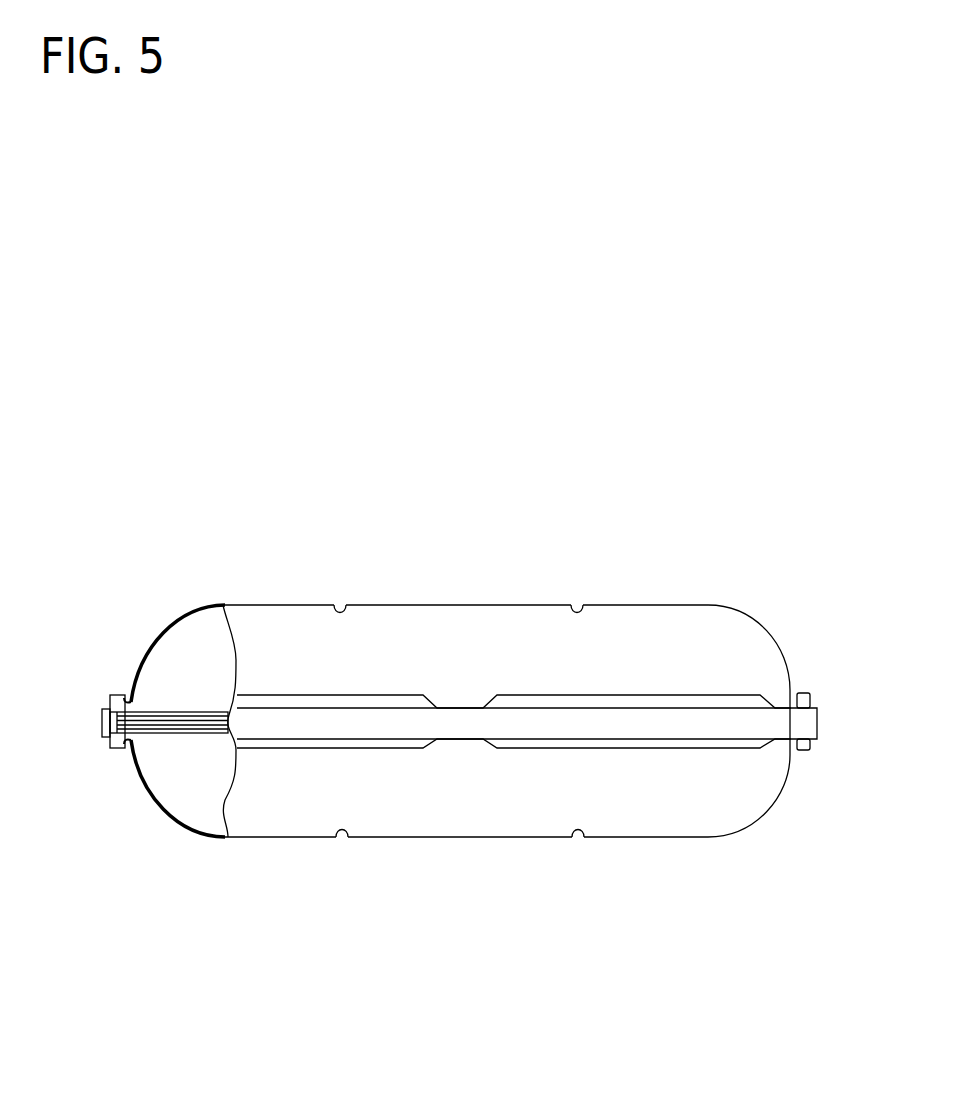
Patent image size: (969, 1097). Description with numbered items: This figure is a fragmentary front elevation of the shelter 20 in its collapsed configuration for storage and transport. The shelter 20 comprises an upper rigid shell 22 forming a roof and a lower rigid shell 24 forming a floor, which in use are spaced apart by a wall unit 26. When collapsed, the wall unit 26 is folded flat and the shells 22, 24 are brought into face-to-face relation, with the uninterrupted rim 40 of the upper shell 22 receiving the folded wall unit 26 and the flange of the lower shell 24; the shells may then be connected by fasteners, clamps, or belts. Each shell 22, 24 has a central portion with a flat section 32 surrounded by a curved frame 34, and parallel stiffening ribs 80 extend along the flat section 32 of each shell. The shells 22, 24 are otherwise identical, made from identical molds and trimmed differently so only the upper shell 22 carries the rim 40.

The shelter 20 is at (596, 455).
The upper rigid shell 22 is at (304, 598).
The lower rigid shell 24 is at (186, 845).
The wall unit 26 is at (154, 750).
The flat section 32 is at (458, 605).
The curved frame 34 is at (163, 623).
The rim 40 is at (102, 727).
The stiffening ribs 80 is at (577, 605).